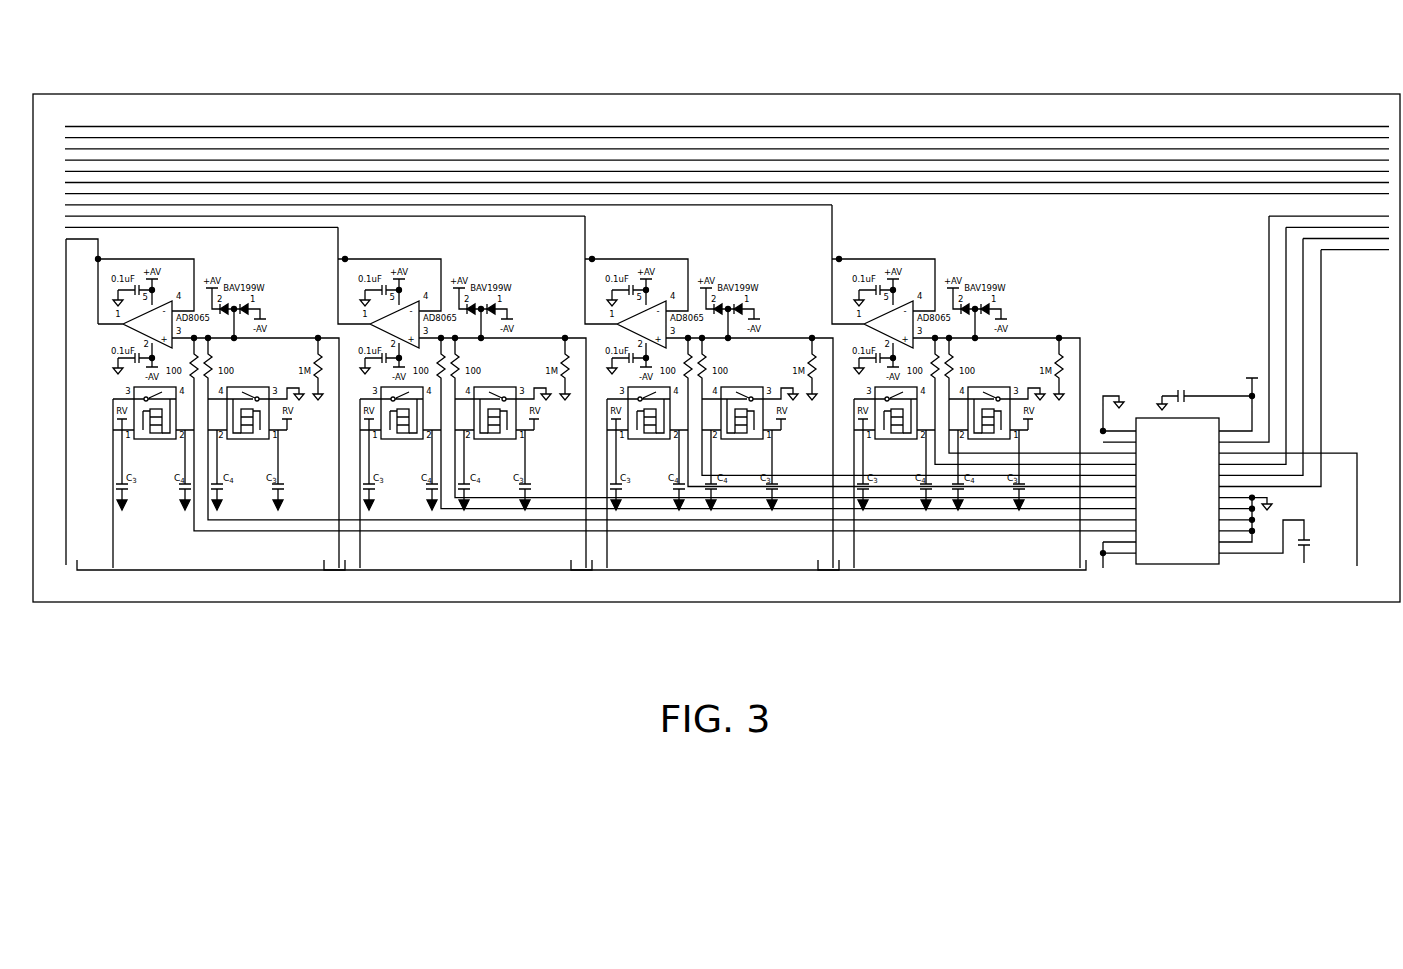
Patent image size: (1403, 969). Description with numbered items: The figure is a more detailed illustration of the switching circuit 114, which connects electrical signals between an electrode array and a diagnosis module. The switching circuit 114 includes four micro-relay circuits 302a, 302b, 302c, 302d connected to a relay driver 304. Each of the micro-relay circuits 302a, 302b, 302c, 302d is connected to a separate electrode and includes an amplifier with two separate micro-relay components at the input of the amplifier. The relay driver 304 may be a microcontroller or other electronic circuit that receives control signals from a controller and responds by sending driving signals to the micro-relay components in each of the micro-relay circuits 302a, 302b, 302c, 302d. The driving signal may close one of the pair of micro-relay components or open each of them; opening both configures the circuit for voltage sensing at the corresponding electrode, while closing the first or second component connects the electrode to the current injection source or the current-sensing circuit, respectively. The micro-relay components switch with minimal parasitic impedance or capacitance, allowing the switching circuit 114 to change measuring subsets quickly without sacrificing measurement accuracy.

The switching circuit 114 is at (1233, 93).
The micro-relay circuit 302a is at (210, 571).
The micro-relay circuit 302b is at (457, 571).
The micro-relay circuit 302c is at (704, 571).
The micro-relay circuit 302d is at (951, 571).
The relay driver 304 is at (1178, 565).